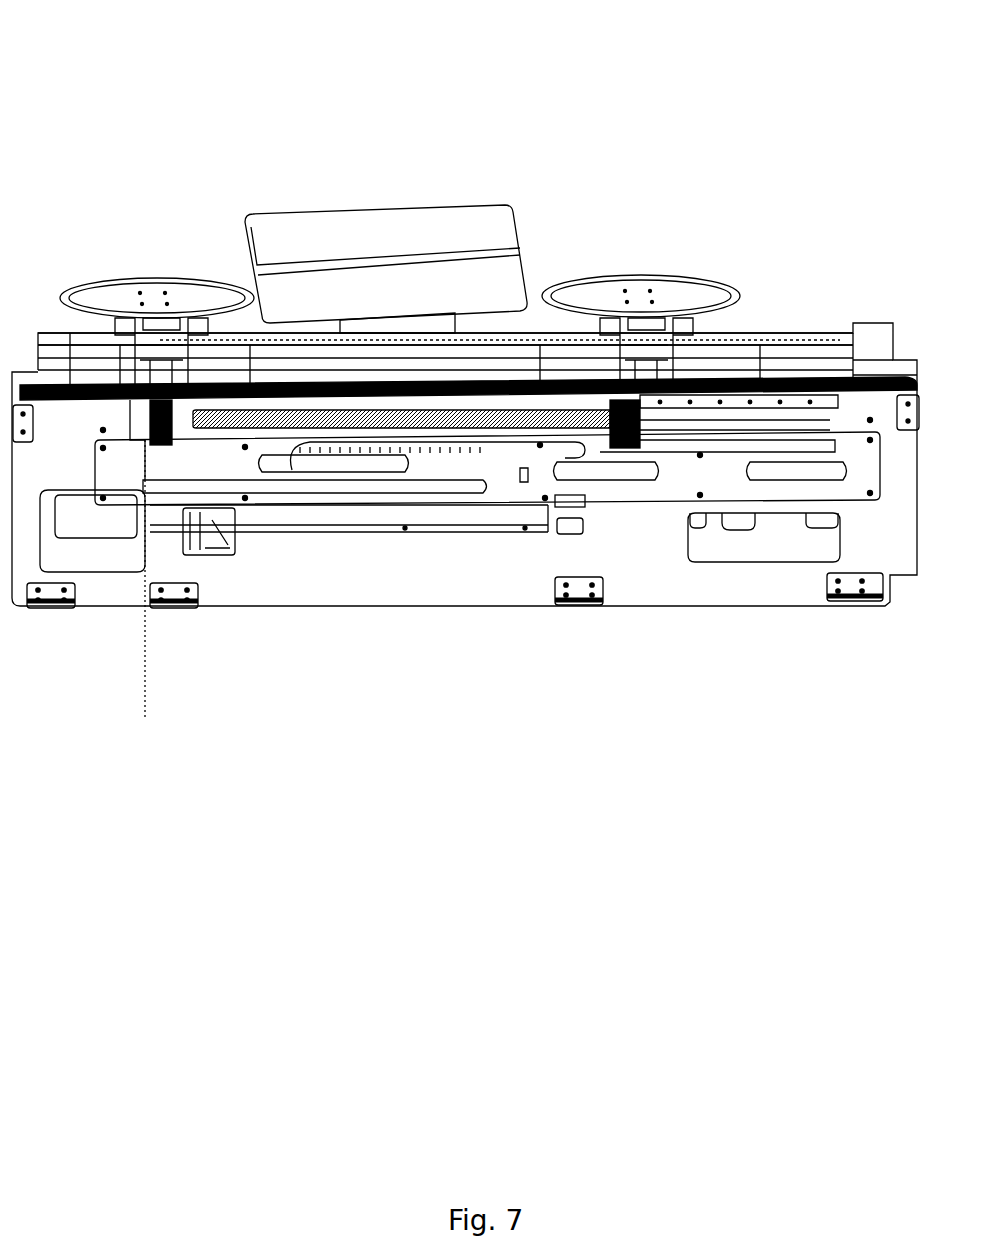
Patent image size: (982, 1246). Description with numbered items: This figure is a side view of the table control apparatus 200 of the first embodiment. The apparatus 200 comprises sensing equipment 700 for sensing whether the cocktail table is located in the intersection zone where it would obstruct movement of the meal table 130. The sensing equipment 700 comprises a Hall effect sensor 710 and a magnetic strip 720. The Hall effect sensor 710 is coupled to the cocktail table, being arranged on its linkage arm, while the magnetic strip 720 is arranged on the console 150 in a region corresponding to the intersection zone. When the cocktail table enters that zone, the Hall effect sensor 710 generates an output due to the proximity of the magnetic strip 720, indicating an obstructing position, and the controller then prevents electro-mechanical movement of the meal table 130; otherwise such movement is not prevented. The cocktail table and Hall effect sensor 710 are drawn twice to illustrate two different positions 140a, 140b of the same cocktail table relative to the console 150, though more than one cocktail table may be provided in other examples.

The table control apparatus 200 is at (225, 125).
The meal table 130 is at (428, 248).
The first position of the cocktail table 140a is at (137, 297).
The second position of the cocktail table 140b is at (652, 287).
The console 150 is at (818, 338).
The sensing equipment 700 is at (455, 432).
The Hall effect sensor 710 is at (573, 457).
The magnetic strip 720 is at (258, 442).